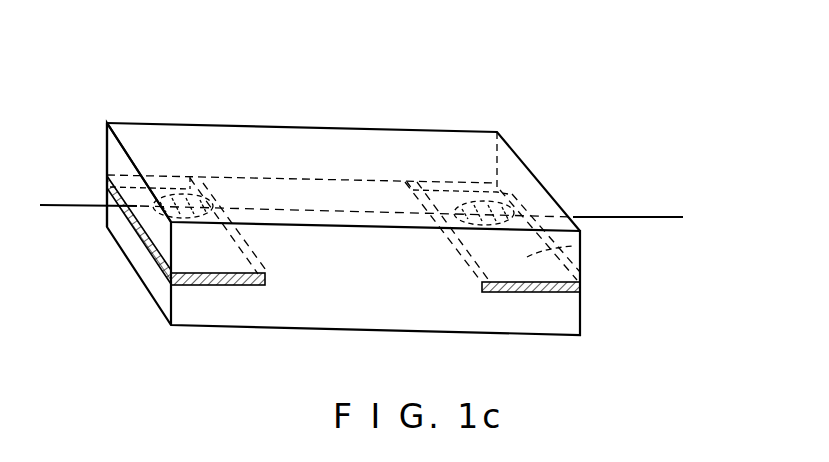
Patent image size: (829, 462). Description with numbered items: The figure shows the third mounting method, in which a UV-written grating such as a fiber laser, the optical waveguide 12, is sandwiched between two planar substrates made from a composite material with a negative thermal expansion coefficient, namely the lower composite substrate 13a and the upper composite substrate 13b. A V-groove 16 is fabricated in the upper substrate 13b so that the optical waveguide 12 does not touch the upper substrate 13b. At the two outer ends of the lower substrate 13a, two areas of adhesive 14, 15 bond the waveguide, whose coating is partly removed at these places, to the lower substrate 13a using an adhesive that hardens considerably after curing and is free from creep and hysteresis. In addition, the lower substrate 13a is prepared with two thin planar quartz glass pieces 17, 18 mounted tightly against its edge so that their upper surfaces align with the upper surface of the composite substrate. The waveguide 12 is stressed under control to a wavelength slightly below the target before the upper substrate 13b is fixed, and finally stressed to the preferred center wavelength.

The optical waveguide 12 is at (632, 215).
The lower composite substrate 13a is at (563, 310).
The upper composite substrate 13b is at (507, 162).
The area of adhesive 14 is at (173, 203).
The area of adhesive 15 is at (467, 208).
The V-groove 16 is at (110, 200).
The quartz glass piece 17 is at (147, 247).
The quartz glass piece 18 is at (580, 255).